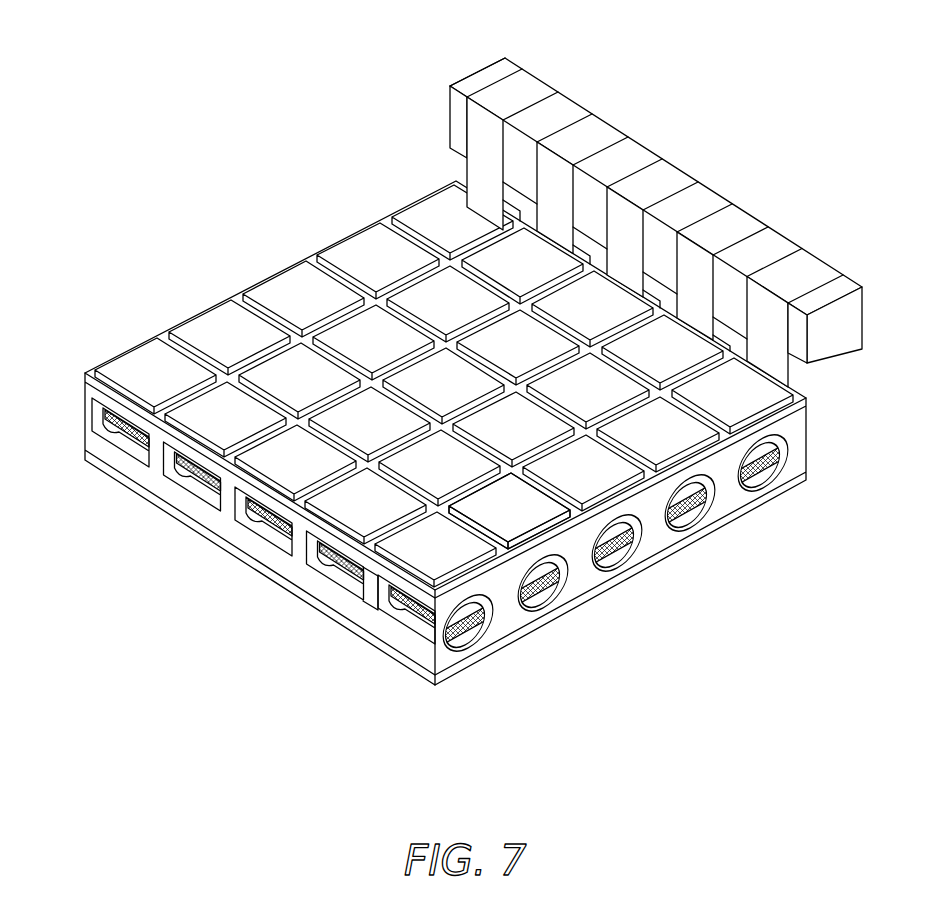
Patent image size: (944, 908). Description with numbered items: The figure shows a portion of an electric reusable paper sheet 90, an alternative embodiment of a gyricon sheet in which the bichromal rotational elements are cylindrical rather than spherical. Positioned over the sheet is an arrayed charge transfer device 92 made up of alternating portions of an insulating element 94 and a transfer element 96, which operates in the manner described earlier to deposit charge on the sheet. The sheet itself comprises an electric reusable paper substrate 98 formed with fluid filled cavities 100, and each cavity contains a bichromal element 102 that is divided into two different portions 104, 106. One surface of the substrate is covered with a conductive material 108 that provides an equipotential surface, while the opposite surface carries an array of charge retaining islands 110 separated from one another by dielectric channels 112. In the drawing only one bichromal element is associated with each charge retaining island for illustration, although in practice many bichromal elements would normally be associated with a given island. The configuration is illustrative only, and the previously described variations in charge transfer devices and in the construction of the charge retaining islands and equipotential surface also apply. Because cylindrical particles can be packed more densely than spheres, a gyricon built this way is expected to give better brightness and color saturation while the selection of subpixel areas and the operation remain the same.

The electric reusable paper sheet 90 is at (148, 328).
The arrayed charge transfer device 92 is at (565, 74).
The insulating element 94 is at (456, 112).
The transfer element 96 is at (483, 177).
The electric reusable paper substrate 98 is at (798, 440).
The fluid filled cavities 100 is at (107, 408).
The bichromal element 102 is at (372, 582).
The first portion of bichromal element 104 is at (418, 628).
The second portion of bichromal element 106 is at (385, 637).
The conductive material 108 is at (170, 508).
The charge retaining islands 110 is at (372, 490).
The dielectric channels 112 is at (462, 520).